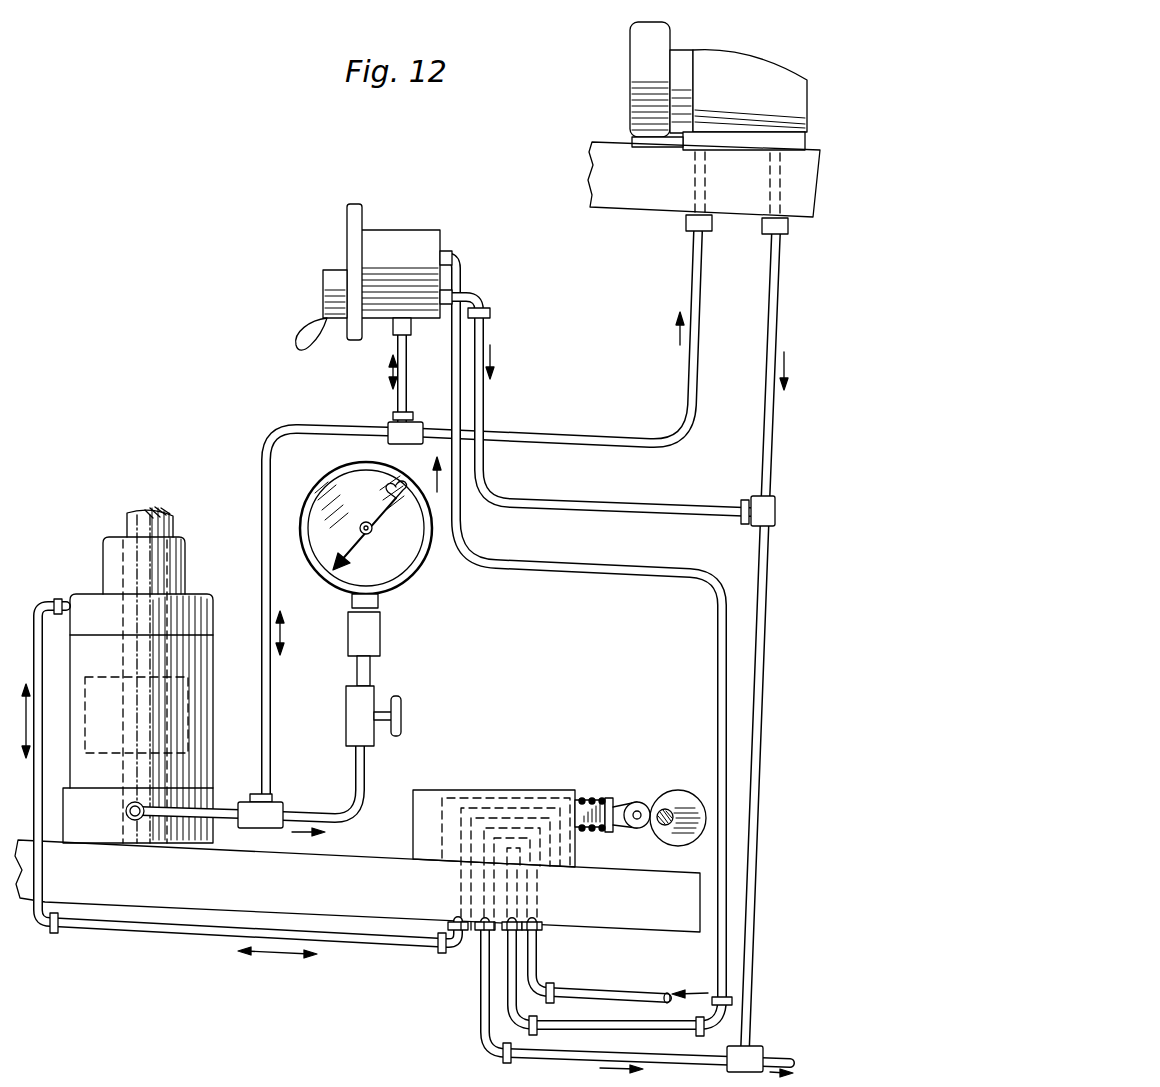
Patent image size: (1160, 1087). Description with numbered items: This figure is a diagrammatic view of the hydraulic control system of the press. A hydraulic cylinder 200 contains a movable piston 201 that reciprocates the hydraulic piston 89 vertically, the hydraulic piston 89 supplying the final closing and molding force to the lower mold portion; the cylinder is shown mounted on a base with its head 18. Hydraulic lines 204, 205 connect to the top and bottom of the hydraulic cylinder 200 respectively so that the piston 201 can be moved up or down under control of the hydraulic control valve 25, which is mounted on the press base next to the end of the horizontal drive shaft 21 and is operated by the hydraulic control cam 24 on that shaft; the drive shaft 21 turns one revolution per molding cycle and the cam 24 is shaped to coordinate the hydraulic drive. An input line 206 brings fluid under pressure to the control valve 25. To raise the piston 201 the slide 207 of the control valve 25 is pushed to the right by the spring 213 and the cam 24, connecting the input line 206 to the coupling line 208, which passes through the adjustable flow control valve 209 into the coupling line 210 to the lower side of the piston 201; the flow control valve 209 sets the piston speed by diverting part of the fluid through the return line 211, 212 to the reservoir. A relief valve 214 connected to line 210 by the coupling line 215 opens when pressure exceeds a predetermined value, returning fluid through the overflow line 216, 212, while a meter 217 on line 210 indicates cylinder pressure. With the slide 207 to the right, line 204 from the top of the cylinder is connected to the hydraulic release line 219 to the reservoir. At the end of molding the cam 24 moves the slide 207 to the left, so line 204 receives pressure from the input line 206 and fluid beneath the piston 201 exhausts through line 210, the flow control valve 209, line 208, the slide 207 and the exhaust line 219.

The relief valve 214 is at (732, 62).
The adjustable flow control valve 209 is at (396, 232).
The coupling line 210 is at (333, 426).
The return line 211 is at (486, 402).
The coupling line 215 is at (582, 437).
The overflow line 216 is at (770, 343).
The return line 212 is at (770, 570).
The coupling line 208 is at (716, 590).
The meter 217 is at (398, 578).
The hydraulic piston 89 is at (175, 528).
The cylinder head 18 is at (186, 567).
The hydraulic cylinder 200 is at (215, 650).
The piston 201 is at (192, 720).
The hydraulic line 205 is at (204, 802).
The hydraulic line 204 is at (34, 625).
The hydraulic control valve 25 is at (429, 800).
The slide 207 is at (477, 803).
The spring 213 is at (590, 800).
The hydraulic control cam 24 is at (684, 795).
The horizontal drive shaft 21 is at (661, 824).
The input line 206 is at (620, 970).
The hydraulic release line 219 is at (560, 1052).